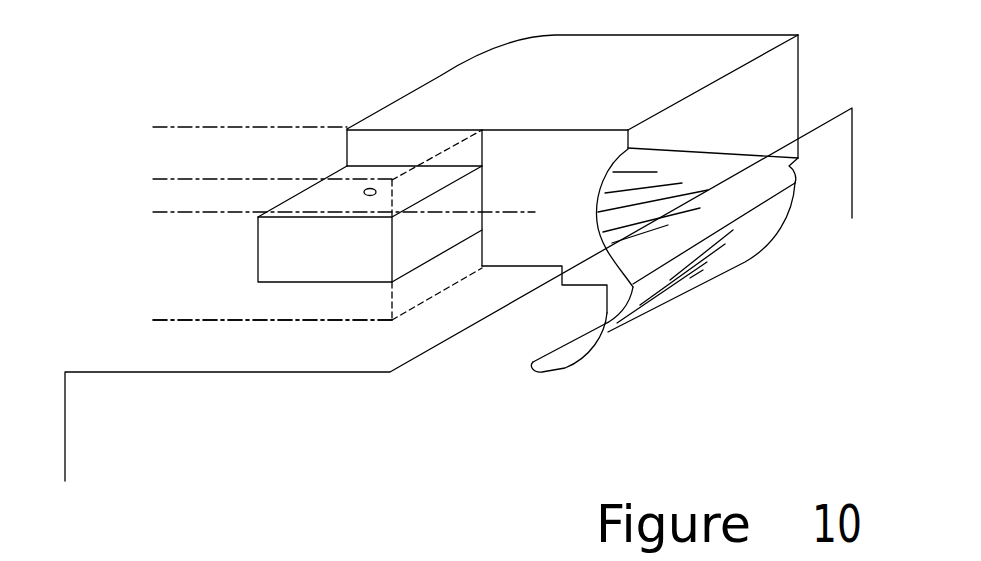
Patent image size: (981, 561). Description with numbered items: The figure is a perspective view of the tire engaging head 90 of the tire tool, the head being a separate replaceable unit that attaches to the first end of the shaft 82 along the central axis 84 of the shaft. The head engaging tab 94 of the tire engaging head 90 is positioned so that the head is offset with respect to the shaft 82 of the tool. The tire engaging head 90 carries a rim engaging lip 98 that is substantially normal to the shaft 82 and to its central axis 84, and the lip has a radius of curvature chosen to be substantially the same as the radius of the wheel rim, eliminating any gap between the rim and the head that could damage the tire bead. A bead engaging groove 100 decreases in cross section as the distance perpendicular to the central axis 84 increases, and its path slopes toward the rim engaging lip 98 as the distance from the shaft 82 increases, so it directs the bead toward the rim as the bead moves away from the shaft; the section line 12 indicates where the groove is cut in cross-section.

The section line 12- 12 is at (454, 324).
The shaft 82 is at (182, 336).
The central axis 84 is at (180, 226).
The tire engaging head 90 is at (270, 71).
The head engaging tab 94 is at (304, 282).
The rim engaging lip 98 is at (530, 356).
The bead engaging groove 100 is at (738, 196).